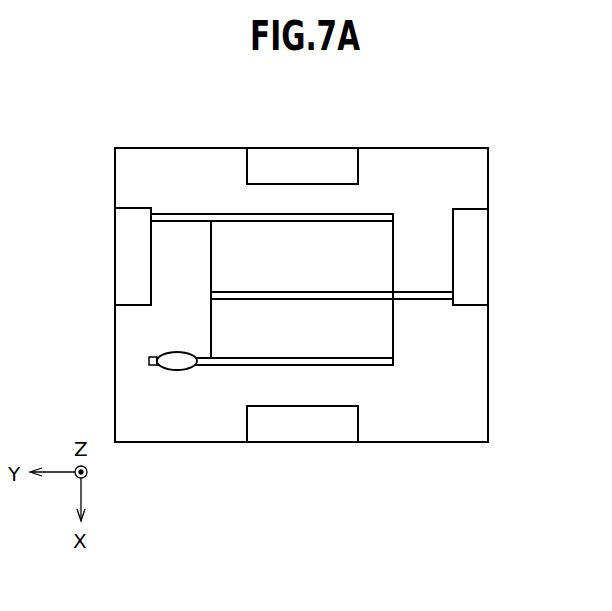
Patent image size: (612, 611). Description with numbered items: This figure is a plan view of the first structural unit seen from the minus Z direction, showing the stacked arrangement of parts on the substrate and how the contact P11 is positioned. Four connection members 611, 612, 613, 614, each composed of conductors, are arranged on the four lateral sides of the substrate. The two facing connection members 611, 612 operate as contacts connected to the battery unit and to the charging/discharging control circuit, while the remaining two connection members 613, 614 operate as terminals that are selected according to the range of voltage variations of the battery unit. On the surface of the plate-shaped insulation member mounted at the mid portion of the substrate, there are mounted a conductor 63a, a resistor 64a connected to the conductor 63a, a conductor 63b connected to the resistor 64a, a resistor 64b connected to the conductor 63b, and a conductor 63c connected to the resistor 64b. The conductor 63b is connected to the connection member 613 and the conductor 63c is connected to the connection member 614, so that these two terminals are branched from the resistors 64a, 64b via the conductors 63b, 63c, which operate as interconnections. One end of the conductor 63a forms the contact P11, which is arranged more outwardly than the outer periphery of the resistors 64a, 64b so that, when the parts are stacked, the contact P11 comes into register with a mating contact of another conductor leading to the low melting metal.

The connection member 611 is at (317, 165).
The connection member 612 is at (303, 425).
The connection member 613 is at (478, 241).
The connection member 614 is at (128, 240).
The conductor 63a is at (383, 362).
The conductor 63b is at (417, 295).
The conductor 63c is at (374, 221).
The resistor 64a is at (233, 337).
The resistor 64b is at (237, 252).
The contact P11 is at (177, 358).